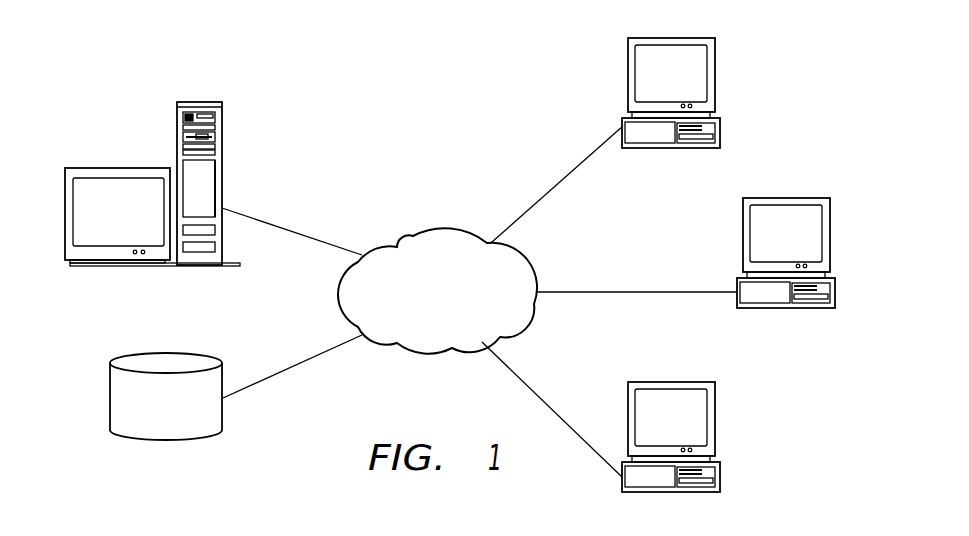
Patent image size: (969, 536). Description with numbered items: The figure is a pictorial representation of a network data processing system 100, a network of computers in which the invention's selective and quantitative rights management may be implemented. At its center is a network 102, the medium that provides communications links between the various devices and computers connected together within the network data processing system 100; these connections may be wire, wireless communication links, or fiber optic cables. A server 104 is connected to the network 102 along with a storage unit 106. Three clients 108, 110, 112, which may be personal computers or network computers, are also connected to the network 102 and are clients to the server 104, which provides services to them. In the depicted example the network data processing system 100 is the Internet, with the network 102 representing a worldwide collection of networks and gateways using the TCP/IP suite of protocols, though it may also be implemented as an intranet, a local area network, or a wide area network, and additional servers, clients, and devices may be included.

The network data processing system 100 is at (306, 75).
The network 102 is at (460, 320).
The server 104 is at (177, 125).
The storage unit 106 is at (110, 395).
The client 108 is at (716, 84).
The client 110 is at (831, 244).
The client 112 is at (716, 425).